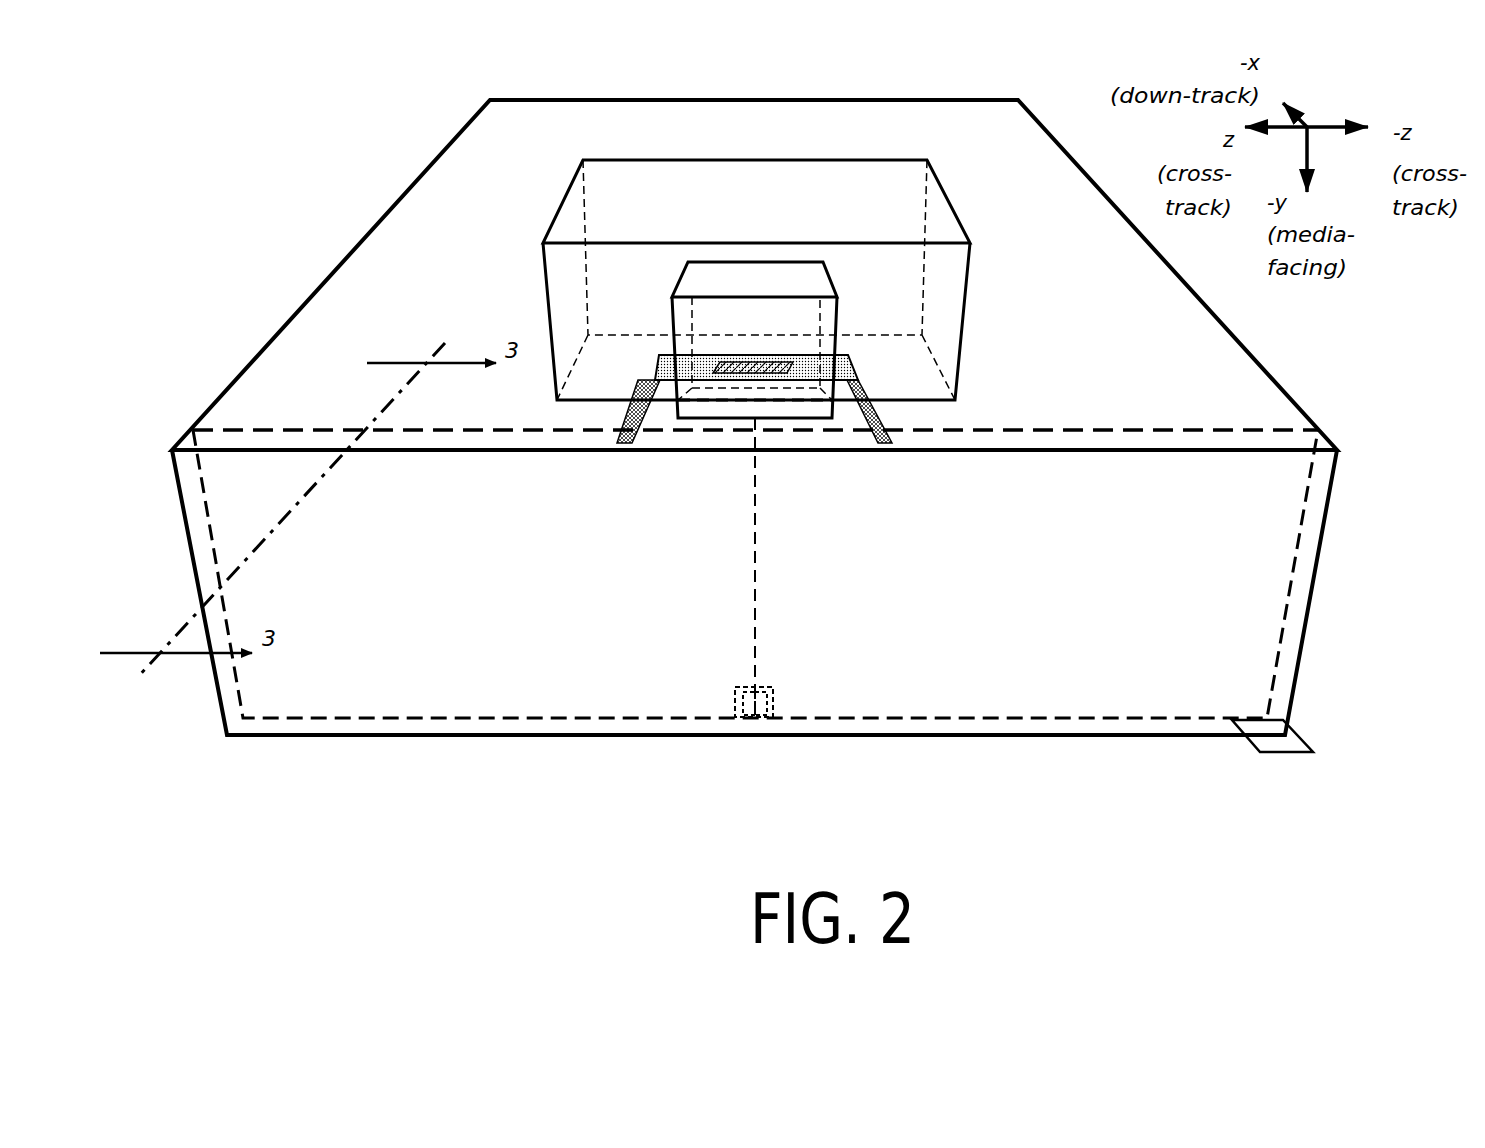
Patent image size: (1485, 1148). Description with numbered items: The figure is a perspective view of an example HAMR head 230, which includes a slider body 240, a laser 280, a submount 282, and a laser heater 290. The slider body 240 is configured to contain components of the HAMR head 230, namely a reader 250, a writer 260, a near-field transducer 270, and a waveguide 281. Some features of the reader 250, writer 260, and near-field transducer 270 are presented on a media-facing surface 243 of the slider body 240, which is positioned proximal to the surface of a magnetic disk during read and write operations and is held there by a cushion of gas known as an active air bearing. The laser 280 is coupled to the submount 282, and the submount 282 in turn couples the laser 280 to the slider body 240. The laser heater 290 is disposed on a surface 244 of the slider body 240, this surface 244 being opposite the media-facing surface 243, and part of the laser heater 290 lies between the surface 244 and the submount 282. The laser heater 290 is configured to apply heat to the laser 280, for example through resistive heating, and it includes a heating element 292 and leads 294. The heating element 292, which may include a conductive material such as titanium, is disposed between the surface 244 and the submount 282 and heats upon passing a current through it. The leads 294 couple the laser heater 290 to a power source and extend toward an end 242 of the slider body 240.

The HAMR head 230 is at (312, 182).
The slider body 240 is at (998, 149).
The end 242 is at (1216, 556).
The media-facing surface 243 is at (1290, 745).
The surface 244 is at (1177, 377).
The reader 250 is at (748, 698).
The writer 260 is at (767, 702).
The near-field transducer 270 is at (762, 717).
The laser 280 is at (785, 282).
The waveguide 281 is at (757, 597).
The submount 282 is at (627, 218).
The laser heater 290 is at (648, 367).
The heating element 292 is at (750, 367).
The leads 294 is at (647, 392).